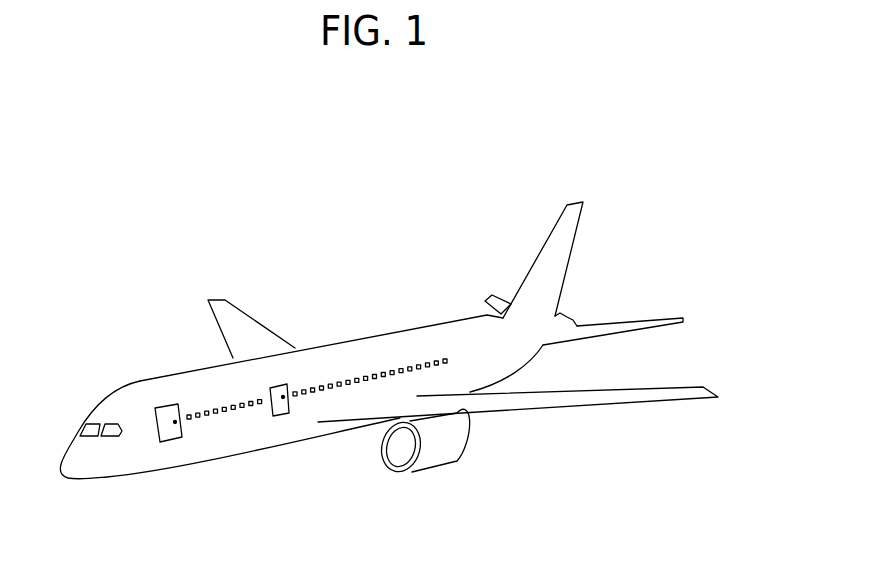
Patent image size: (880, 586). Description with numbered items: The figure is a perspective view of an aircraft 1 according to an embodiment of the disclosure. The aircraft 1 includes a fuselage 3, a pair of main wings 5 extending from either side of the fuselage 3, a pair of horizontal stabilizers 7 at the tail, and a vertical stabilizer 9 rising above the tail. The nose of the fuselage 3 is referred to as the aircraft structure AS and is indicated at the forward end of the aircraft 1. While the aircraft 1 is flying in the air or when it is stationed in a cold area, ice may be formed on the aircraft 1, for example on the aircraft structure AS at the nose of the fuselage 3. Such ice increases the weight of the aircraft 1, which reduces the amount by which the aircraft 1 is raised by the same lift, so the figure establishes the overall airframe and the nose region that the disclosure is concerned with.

The aircraft 1 is at (330, 181).
The aircraft structure AS is at (81, 391).
The fuselage 3 is at (333, 340).
The main wings 5 is at (235, 320).
The horizontal stabilizers 7 is at (492, 300).
The vertical stabilizer 9 is at (570, 220).